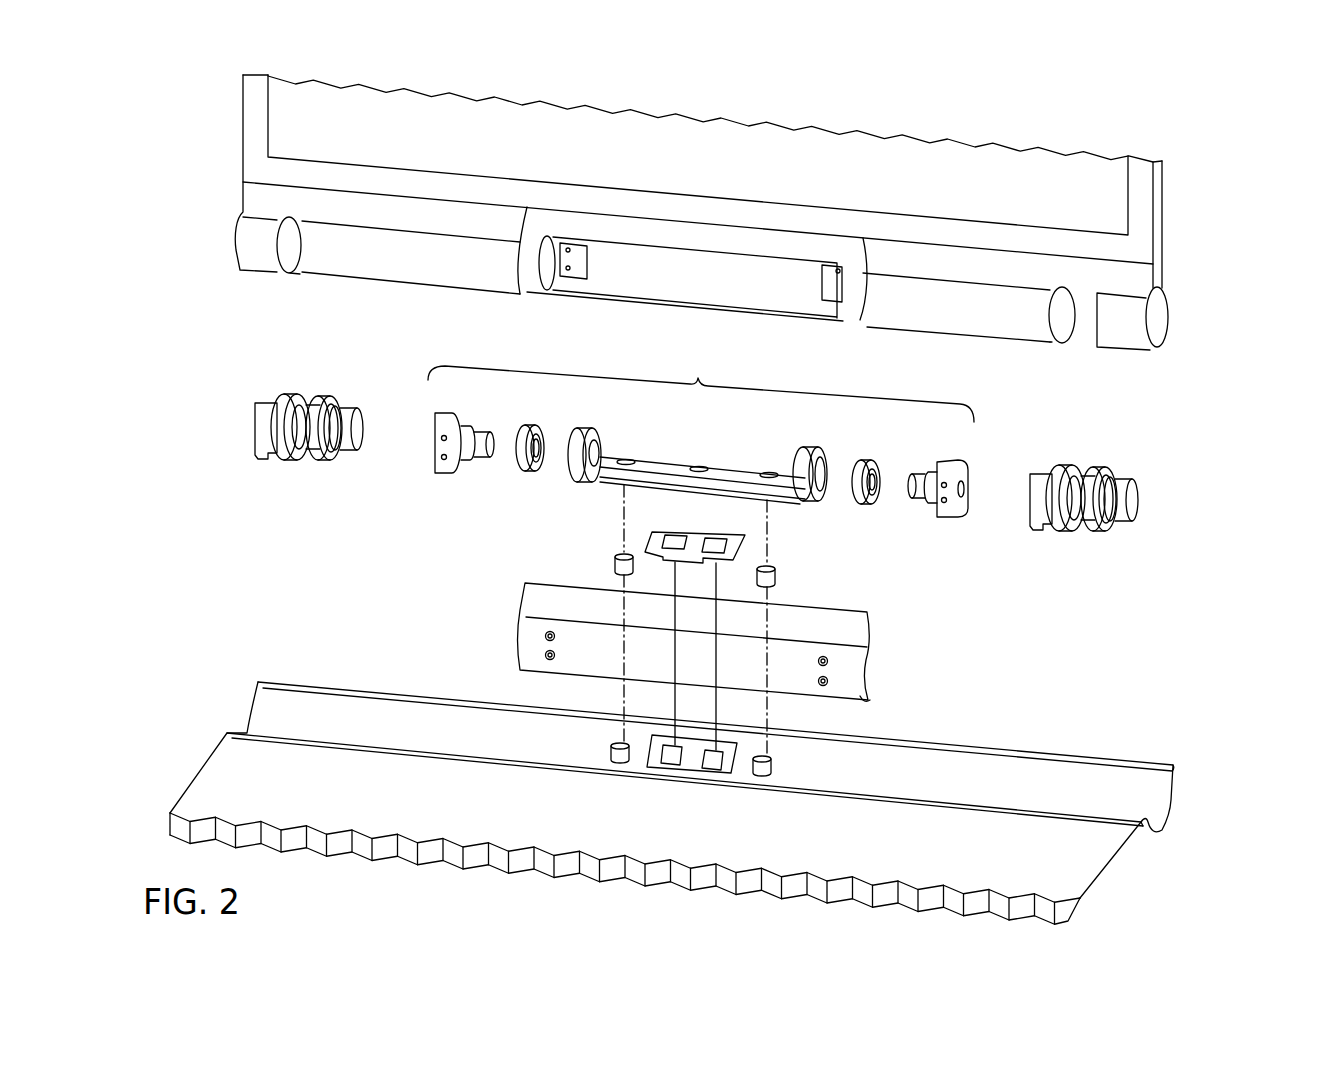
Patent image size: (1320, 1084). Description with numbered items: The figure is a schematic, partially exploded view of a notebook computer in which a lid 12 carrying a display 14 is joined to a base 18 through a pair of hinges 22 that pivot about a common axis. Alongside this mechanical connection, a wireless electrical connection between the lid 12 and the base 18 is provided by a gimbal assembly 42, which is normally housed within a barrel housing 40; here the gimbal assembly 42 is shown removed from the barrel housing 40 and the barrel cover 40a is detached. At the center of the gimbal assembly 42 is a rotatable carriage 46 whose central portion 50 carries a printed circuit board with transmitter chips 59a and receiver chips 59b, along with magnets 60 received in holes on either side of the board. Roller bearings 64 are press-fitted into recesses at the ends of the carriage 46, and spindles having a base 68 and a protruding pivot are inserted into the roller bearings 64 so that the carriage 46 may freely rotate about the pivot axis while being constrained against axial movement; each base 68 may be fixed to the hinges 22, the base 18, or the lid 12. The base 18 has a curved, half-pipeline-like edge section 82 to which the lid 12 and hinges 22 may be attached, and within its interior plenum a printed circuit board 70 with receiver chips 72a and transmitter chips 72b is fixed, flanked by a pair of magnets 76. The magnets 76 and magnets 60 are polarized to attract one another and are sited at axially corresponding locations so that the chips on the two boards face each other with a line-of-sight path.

The lid 12 is at (748, 231).
The display 14 is at (709, 174).
The base 18 is at (221, 785).
The hinges 22 is at (286, 464).
The barrel housing 40 is at (394, 273).
The barrel cover 40a is at (852, 668).
The gimbal assembly 42 is at (698, 378).
The rotatable carriage 46 is at (678, 491).
The central portion 50 is at (723, 469).
The transmitter chips 59a is at (672, 537).
The receiver chips 59b is at (718, 540).
The magnets 60 is at (614, 560).
The roller bearings 64 is at (525, 473).
The base 68 is at (445, 473).
The printed circuit board 70 is at (690, 764).
The receiver chips 72a is at (665, 768).
The transmitter chips 72b is at (714, 772).
The magnets 76 is at (610, 752).
The edge section 82 is at (1012, 778).